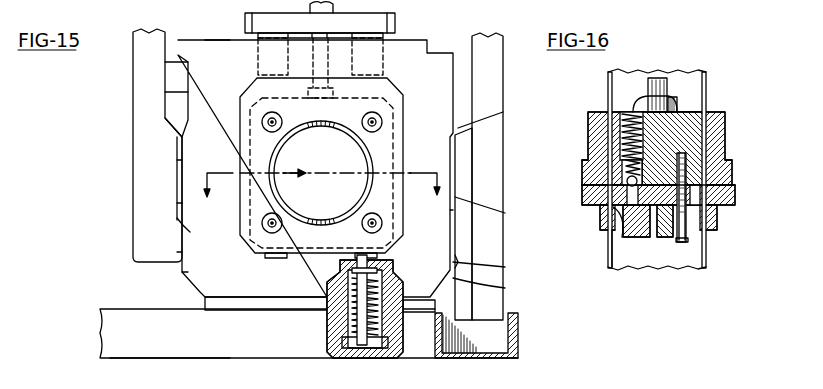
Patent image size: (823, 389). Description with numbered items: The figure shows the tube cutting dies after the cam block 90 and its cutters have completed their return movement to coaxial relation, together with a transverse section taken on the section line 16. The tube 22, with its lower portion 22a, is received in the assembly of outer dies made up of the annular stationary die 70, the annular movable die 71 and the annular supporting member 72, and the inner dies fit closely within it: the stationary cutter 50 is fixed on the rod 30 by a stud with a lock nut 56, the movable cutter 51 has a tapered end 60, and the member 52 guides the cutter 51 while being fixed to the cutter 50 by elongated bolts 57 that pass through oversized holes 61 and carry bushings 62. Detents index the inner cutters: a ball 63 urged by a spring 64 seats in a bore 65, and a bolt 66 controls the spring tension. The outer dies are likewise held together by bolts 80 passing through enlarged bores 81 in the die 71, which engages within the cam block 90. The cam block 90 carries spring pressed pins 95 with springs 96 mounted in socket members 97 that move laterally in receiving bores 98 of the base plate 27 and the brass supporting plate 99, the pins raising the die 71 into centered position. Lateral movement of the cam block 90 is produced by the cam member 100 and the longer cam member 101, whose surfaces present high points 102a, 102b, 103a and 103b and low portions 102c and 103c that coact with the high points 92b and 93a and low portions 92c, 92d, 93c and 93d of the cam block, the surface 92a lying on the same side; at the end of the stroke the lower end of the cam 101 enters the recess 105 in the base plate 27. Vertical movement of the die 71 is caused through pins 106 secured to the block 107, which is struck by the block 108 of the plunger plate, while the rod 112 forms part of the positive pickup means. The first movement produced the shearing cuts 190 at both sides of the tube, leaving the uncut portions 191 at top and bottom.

In FIG. 15, the section line 16 is at (324, 176).
In FIG. 16, the tube 22 is at (608, 85).
In FIG. 16, the tube lower portion 22a is at (707, 252).
In FIG. 15, the base plate 27 is at (107, 333).
In FIG. 16, the rod 30 is at (657, 82).
In FIG. 16, the stationary cutter 50 is at (705, 98).
In FIG. 16, the movable cutter 51 is at (612, 257).
In FIG. 16, the member 52 is at (646, 238).
In FIG. 16, the lock nut 56 is at (685, 116).
In FIG. 16, the elongated bolt 57 is at (683, 243).
In FIG. 16, the tapered end 60 is at (610, 238).
In FIG. 16, the hole 61 is at (732, 175).
In FIG. 16, the bushing 62 is at (737, 200).
In FIG. 16, the ball 63 is at (628, 178).
In FIG. 16, the spring 64 is at (625, 158).
In FIG. 16, the bore 65 is at (630, 238).
In FIG. 16, the bolt 66 is at (623, 137).
In FIG. 15, the stationary die 70 is at (252, 115).
In FIG. 16, the stationary die 70 is at (722, 137).
In FIG. 15, the movable die 71 is at (250, 104).
In FIG. 16, the movable die 71 is at (583, 193).
In FIG. 16, the supporting member 72 is at (727, 218).
In FIG. 15, the bolt 80 is at (383, 118).
In FIG. 15, the enlarged bore 81 is at (376, 119).
In FIG. 15, the cam block 90 is at (212, 44).
In FIG. 15, the guide surface 92a is at (188, 58).
In FIG. 15, the high point 92b is at (177, 163).
In FIG. 15, the low portion 92c is at (188, 91).
In FIG. 15, the low portion 92d is at (187, 203).
In FIG. 15, the high point 93a is at (503, 113).
In FIG. 15, the low portion 93c is at (505, 213).
In FIG. 15, the low portion 93d is at (505, 267).
In FIG. 15, the spring pressed pin 95 is at (275, 257).
In FIG. 15, the spring 96 is at (340, 288).
In FIG. 15, the socket member 97 is at (343, 326).
In FIG. 15, the receiving bore 98 is at (405, 370).
In FIG. 15, the supporting plate 99 is at (203, 300).
In FIG. 15, the cam member 100 is at (140, 163).
In FIG. 15, the cam member 101 is at (493, 37).
In FIG. 15, the high point 102a is at (182, 137).
In FIG. 15, the high point 102b is at (180, 252).
In FIG. 15, the low portion 102c is at (207, 234).
In FIG. 15, the high point 103a is at (454, 167).
In FIG. 15, the high point 103b is at (505, 288).
In FIG. 15, the low portion 103c is at (452, 218).
In FIG. 15, the recess 105 is at (505, 335).
In FIG. 15, the pin 106 is at (258, 56).
In FIG. 15, the block 107 is at (396, 24).
In FIG. 15, the block 108 is at (189, 373).
In FIG. 15, the rod 112 is at (327, 194).
In FIG. 15, the shearing cut 190 is at (327, 156).
In FIG. 15, the uncut portion 191 is at (340, 118).